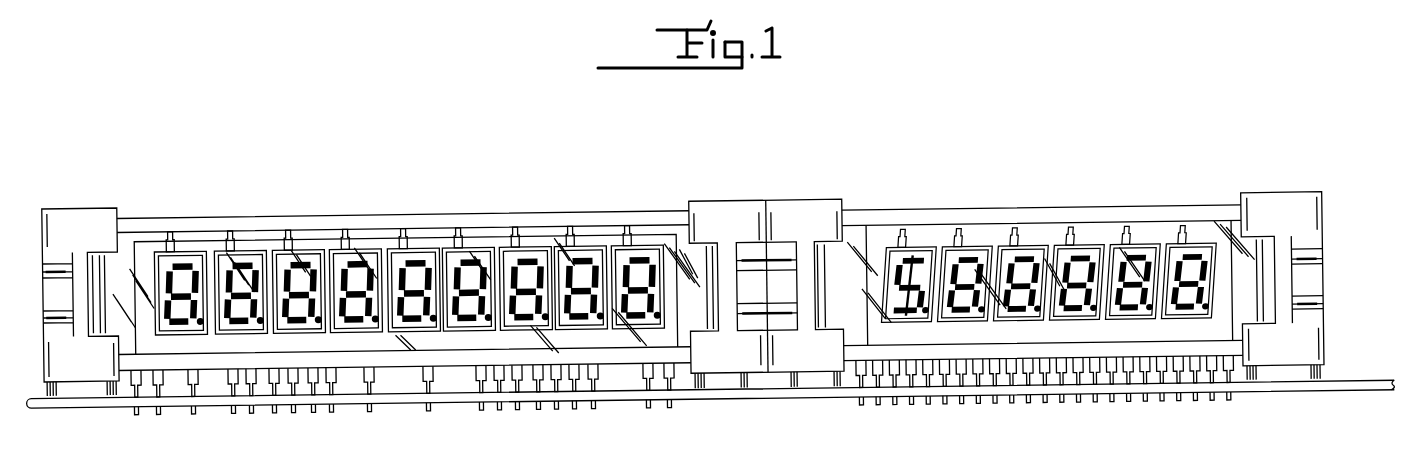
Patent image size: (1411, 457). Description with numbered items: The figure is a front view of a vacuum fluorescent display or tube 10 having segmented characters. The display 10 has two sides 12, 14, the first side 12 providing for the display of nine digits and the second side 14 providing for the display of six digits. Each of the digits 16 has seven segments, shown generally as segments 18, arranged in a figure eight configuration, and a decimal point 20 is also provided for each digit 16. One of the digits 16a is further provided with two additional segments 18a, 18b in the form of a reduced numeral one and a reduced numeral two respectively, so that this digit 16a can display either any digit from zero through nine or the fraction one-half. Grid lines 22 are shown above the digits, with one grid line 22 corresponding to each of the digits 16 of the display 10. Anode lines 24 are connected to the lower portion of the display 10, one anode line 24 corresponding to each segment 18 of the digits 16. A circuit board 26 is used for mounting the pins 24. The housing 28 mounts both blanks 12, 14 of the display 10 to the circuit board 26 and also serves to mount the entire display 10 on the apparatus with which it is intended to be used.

The vacuum fluorescent display 10 is at (234, 194).
The side 12 is at (410, 420).
The side 14 is at (975, 421).
The digit 16 is at (243, 264).
The digit 16a is at (647, 251).
The segment 18 is at (452, 264).
The additional segment 18a is at (623, 270).
The additional segment 18b is at (638, 331).
The decimal point 20 is at (543, 329).
The grid line 22 is at (340, 236).
The anode line 24 is at (297, 395).
The circuit board 26 is at (352, 410).
The housing 28 is at (68, 368).